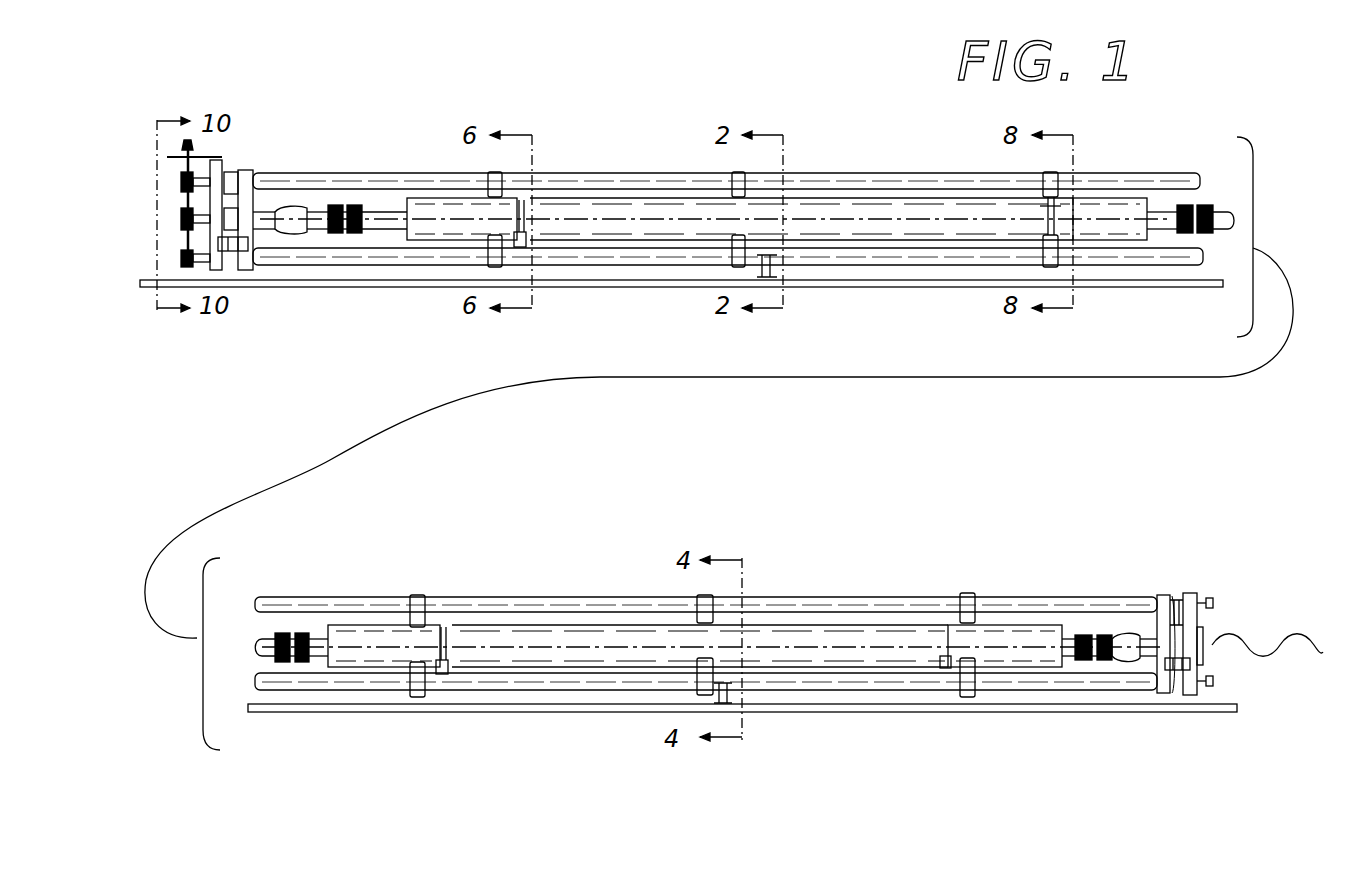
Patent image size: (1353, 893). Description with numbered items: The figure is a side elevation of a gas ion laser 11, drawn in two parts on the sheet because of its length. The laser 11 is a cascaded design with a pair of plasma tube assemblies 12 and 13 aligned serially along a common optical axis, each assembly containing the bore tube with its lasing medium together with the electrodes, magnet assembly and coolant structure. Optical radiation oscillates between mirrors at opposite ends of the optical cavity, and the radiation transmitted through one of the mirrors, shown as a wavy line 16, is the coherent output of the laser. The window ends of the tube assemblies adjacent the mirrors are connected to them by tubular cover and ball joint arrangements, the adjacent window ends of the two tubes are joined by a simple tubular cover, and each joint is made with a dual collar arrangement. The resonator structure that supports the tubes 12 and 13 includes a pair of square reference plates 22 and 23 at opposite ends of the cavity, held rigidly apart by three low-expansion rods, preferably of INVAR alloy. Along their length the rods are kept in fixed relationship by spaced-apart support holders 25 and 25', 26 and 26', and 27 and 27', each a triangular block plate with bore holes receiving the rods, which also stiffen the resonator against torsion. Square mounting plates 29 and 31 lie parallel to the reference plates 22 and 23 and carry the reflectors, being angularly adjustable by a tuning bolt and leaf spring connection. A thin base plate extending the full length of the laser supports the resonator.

The laser 11 is at (680, 112).
The plasma tube assembly 12 is at (585, 215).
The plasma tube assembly 13 is at (565, 636).
The optical radiation output 16 is at (1265, 632).
The reference plate 22 is at (255, 268).
The reference plate 23 is at (1165, 693).
The support holder 25 is at (1081, 245).
The support holder 25' is at (438, 628).
The support holder 26 is at (727, 245).
The support holder 26' is at (679, 633).
The support holder 27 is at (467, 207).
The support holder 27' is at (992, 621).
The mounting plate 29 is at (228, 268).
The mounting plate 31 is at (1190, 696).